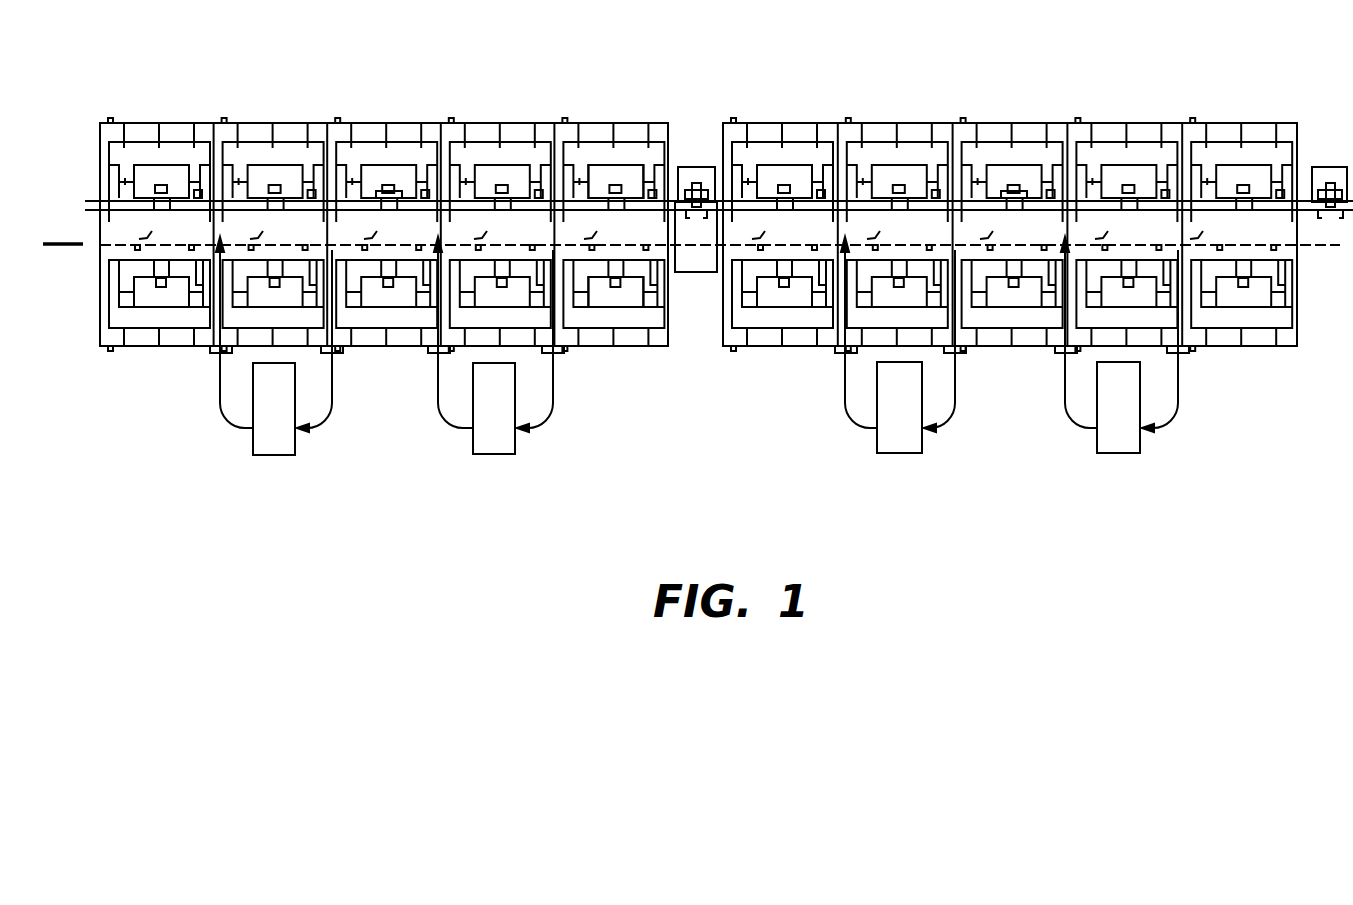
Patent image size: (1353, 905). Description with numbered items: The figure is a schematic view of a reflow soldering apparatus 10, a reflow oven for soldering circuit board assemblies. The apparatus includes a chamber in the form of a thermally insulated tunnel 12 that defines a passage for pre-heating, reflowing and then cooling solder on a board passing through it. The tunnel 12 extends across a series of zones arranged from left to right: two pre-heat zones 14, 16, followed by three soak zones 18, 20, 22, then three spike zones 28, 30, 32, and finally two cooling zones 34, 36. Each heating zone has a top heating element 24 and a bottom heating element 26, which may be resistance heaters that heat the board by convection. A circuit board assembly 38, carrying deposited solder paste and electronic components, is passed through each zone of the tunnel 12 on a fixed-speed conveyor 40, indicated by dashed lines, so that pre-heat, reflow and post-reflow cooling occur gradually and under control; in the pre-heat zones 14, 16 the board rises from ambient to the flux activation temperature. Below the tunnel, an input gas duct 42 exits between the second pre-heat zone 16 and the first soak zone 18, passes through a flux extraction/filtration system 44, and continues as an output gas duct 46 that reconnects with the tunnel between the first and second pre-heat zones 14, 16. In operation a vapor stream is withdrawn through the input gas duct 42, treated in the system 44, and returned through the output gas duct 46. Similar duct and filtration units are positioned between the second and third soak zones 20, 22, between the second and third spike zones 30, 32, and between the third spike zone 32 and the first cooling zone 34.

The reflow soldering apparatus 10 is at (512, 45).
The thermally insulated tunnel 12 is at (945, 226).
The first pre-heat zone 14 is at (152, 232).
The second pre-heat zone 16 is at (263, 232).
The first soak zone 18 is at (377, 232).
The second soak zone 20 is at (487, 232).
The third soak zone 22 is at (597, 232).
The top heating element 24 is at (608, 165).
The bottom heating element 26 is at (607, 312).
The first spike zone 28 is at (765, 232).
The second spike zone 30 is at (880, 232).
The third spike zone 32 is at (993, 232).
The first cooling zone 34 is at (1108, 232).
The second cooling zone 36 is at (1203, 232).
The circuit board assembly 38 is at (45, 247).
The fixed-speed conveyor 40 is at (98, 245).
The input gas duct 42 is at (323, 427).
The flux extraction/filtration system 44 is at (250, 459).
The output gas duct 46 is at (224, 419).